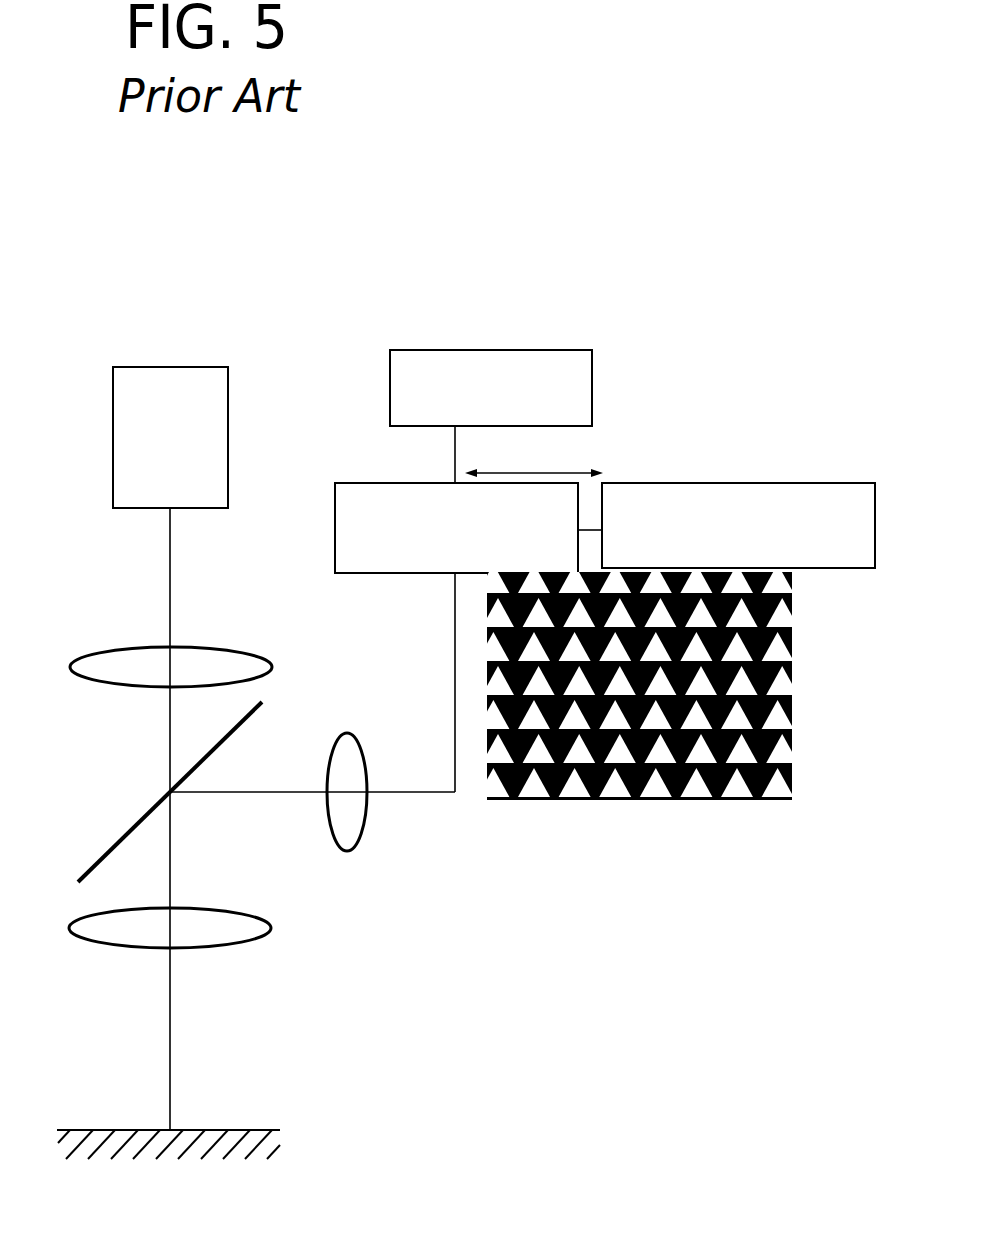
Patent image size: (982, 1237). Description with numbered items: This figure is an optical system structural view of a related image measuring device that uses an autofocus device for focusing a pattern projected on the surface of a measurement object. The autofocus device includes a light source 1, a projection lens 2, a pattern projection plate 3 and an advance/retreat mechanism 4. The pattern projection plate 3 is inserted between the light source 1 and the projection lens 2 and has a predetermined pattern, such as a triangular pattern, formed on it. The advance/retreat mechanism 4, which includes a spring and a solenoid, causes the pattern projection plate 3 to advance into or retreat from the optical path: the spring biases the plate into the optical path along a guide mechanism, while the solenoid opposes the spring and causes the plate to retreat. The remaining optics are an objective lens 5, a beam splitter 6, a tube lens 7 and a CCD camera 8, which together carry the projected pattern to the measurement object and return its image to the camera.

The light source 1 is at (465, 350).
The projection lens 2 is at (363, 818).
The pattern projection plate 3 is at (398, 483).
The advance/retreat mechanism 4 is at (716, 483).
The objective lens 5 is at (100, 945).
The beam splitter 6 is at (125, 833).
The tube lens 7 is at (125, 648).
The CCD camera 8 is at (115, 397).